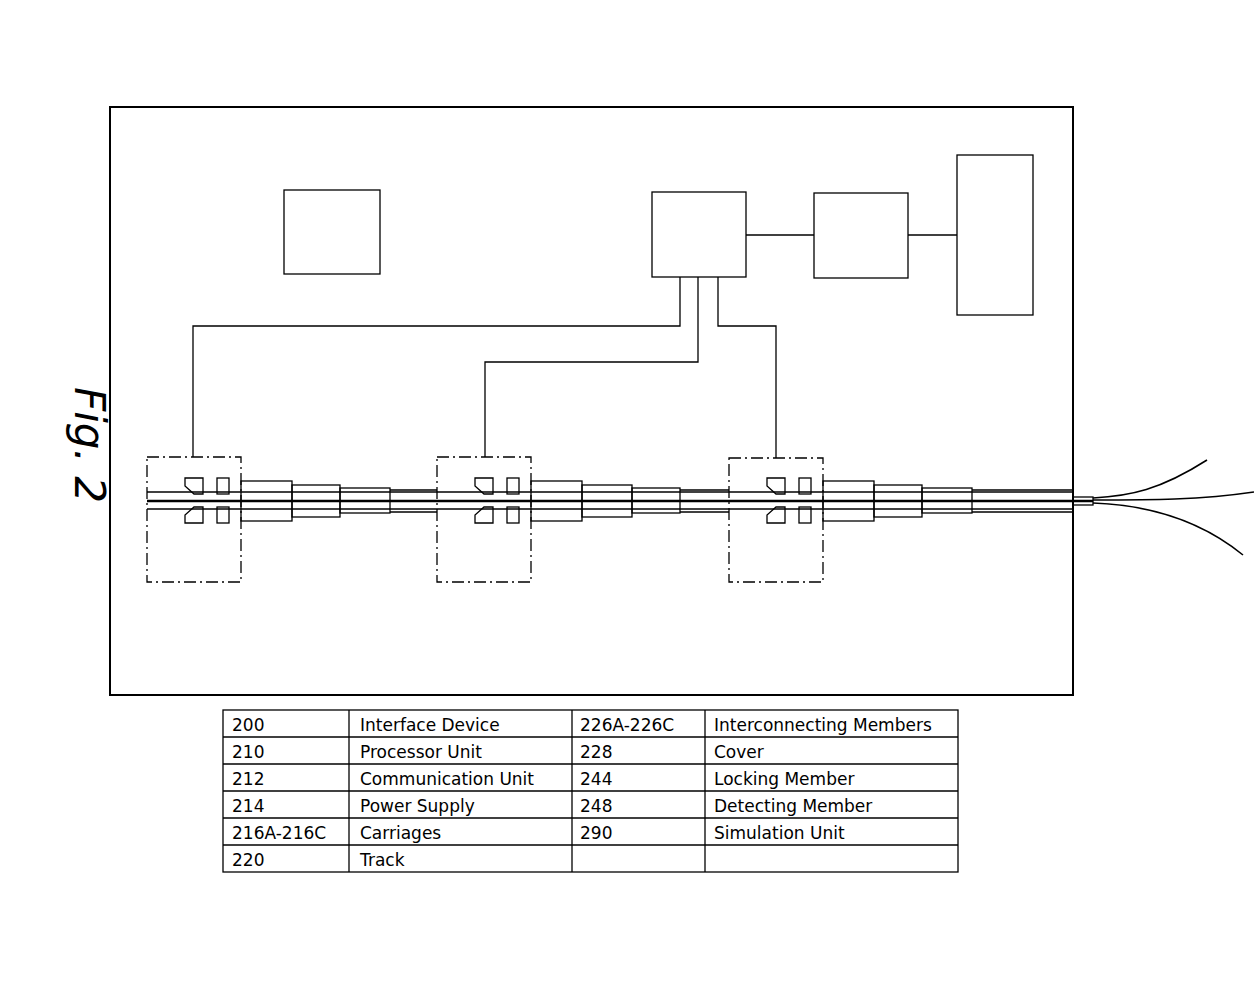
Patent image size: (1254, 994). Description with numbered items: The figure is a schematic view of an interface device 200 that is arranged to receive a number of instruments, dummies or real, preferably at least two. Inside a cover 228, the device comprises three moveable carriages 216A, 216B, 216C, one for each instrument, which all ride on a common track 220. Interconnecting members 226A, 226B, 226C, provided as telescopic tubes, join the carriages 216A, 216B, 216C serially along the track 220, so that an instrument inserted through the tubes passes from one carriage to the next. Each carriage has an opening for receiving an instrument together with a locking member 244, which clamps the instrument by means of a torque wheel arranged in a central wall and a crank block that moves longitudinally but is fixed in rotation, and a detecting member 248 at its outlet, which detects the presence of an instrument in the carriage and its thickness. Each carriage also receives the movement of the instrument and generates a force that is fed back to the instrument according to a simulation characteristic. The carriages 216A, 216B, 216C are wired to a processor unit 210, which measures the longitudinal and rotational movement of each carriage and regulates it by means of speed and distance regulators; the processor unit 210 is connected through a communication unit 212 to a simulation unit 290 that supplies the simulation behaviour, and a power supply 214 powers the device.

The interface device 200 is at (302, 77).
The processor unit 210 is at (484, 325).
The communication unit 212 is at (827, 235).
The power supply 214 is at (332, 232).
The carriage 216A is at (797, 553).
The carriage 216B is at (498, 553).
The carriage 216C is at (190, 567).
The track 220 is at (356, 512).
The interconnecting member 226A is at (934, 475).
The interconnecting member 226B is at (620, 472).
The interconnecting member 226C is at (352, 472).
The cover 228 is at (690, 108).
The locking member 244 is at (197, 486).
The detecting member 248 is at (222, 480).
The simulation unit 290 is at (970, 235).